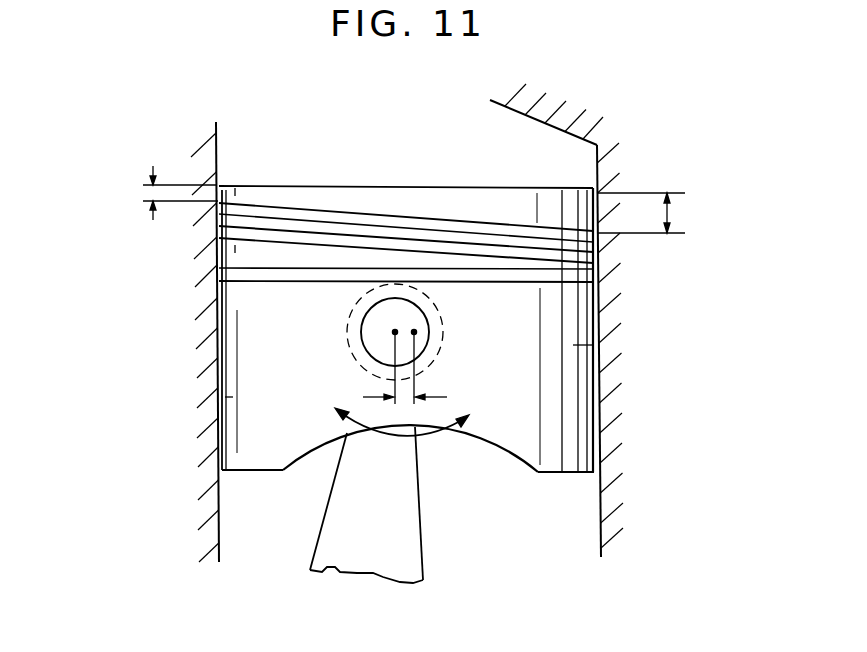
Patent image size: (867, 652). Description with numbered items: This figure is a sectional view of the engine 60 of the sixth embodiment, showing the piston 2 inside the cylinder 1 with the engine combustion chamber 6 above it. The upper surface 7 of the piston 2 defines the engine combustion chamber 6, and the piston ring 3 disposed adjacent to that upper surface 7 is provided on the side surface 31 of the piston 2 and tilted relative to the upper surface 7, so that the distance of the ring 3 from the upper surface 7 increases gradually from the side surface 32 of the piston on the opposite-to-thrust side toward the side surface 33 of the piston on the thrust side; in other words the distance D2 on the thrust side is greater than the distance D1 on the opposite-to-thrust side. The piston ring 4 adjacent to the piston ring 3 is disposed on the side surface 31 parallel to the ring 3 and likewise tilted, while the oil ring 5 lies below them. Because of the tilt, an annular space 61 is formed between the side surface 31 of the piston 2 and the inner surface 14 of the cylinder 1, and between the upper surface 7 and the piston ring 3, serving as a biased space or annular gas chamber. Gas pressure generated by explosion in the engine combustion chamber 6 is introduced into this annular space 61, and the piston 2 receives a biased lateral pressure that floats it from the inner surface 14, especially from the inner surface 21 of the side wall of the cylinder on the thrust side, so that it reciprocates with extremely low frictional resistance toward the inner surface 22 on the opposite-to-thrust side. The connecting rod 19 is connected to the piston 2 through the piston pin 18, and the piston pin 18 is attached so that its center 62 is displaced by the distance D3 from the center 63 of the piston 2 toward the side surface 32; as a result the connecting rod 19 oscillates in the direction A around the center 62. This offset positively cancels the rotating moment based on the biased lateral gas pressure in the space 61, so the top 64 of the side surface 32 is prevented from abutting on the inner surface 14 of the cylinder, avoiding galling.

The cylinder 1 is at (207, 475).
The piston 2 is at (217, 400).
The piston ring 3 is at (290, 209).
The piston ring 4 is at (335, 237).
The oil ring 5 is at (280, 282).
The engine combustion chamber 6 is at (565, 148).
The upper surface of the piston 7 is at (408, 187).
The inner surface of the cylinder 14 is at (603, 514).
The piston pin 18 is at (357, 337).
The connecting rod 19 is at (418, 549).
The inner surface of the side wall of the cylinder on the thrust side 21 is at (601, 544).
The inner surface of the side wall of the cylinder on the opposite-to-thrust side 22 is at (218, 537).
The side surface of the piston 31 is at (600, 341).
The side surface of the piston on the opposite-to-thrust side 32 is at (218, 352).
The side surface of the piston on the thrust side 33 is at (601, 395).
The engine 60 is at (130, 510).
The annular space 61 is at (594, 208).
The center of the piston pin 62 is at (432, 323).
The center of the piston 63 is at (417, 333).
The top of the side surface of the piston 64 is at (223, 187).
The distance D1 is at (149, 192).
The distance D2 is at (673, 210).
The distance D3 is at (436, 394).
The direction A is at (385, 434).